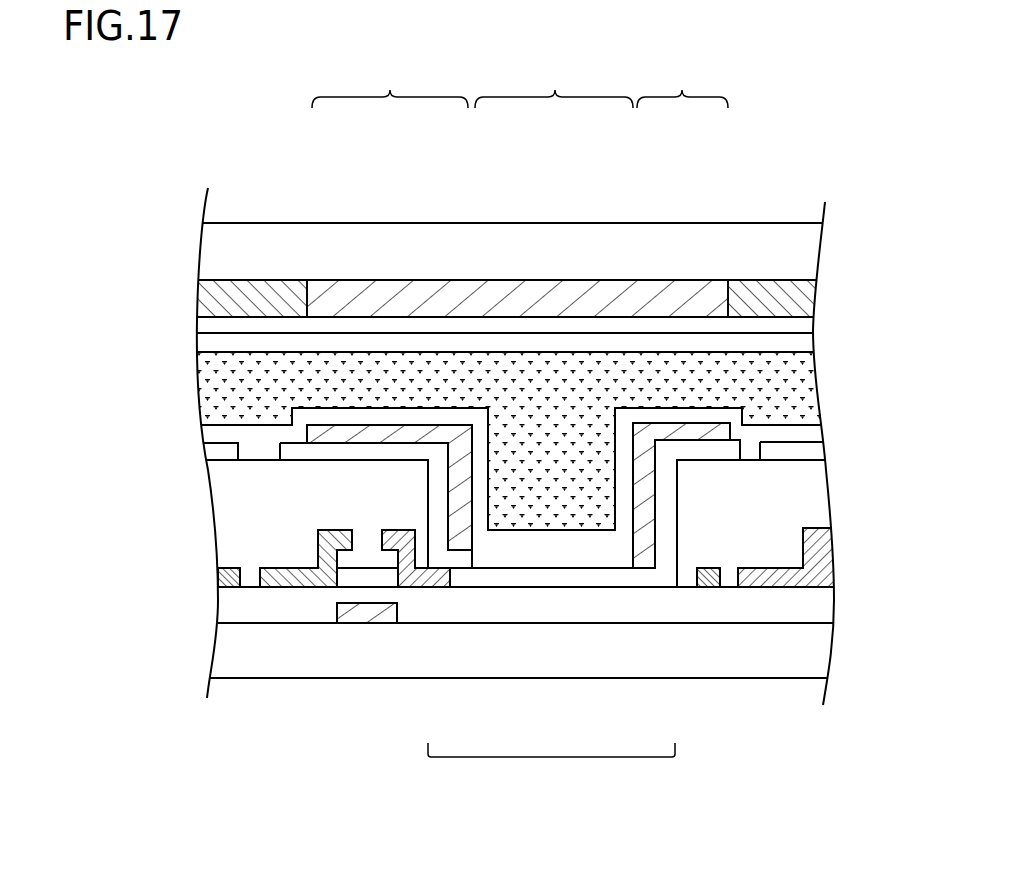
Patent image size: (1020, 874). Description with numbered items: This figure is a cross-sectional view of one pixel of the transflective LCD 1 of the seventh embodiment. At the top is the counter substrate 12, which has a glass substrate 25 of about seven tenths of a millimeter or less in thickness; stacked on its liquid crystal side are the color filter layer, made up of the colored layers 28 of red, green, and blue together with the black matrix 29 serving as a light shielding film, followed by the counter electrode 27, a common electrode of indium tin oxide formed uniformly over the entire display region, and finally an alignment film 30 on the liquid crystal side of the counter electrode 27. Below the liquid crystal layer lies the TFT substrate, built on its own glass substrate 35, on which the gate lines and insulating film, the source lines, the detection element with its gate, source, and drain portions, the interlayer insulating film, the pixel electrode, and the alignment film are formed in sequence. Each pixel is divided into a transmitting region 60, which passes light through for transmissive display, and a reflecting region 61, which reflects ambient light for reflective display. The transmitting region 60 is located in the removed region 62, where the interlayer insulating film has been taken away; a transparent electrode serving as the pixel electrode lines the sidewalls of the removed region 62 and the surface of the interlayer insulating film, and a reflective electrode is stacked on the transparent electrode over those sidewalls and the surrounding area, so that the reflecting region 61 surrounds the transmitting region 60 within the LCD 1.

The LCD 1 is at (220, 173).
The counter substrate 12 is at (397, 222).
The glass substrate 25 is at (810, 250).
The counter electrode 27 is at (803, 327).
The colored layer 28 is at (563, 290).
The black matrix 29 is at (258, 283).
The alignment film 30 is at (805, 343).
The glass substrate 35 is at (813, 657).
The transmitting region 60 is at (554, 82).
The reflecting region 61 is at (520, 82).
The removed region 62 is at (551, 773).